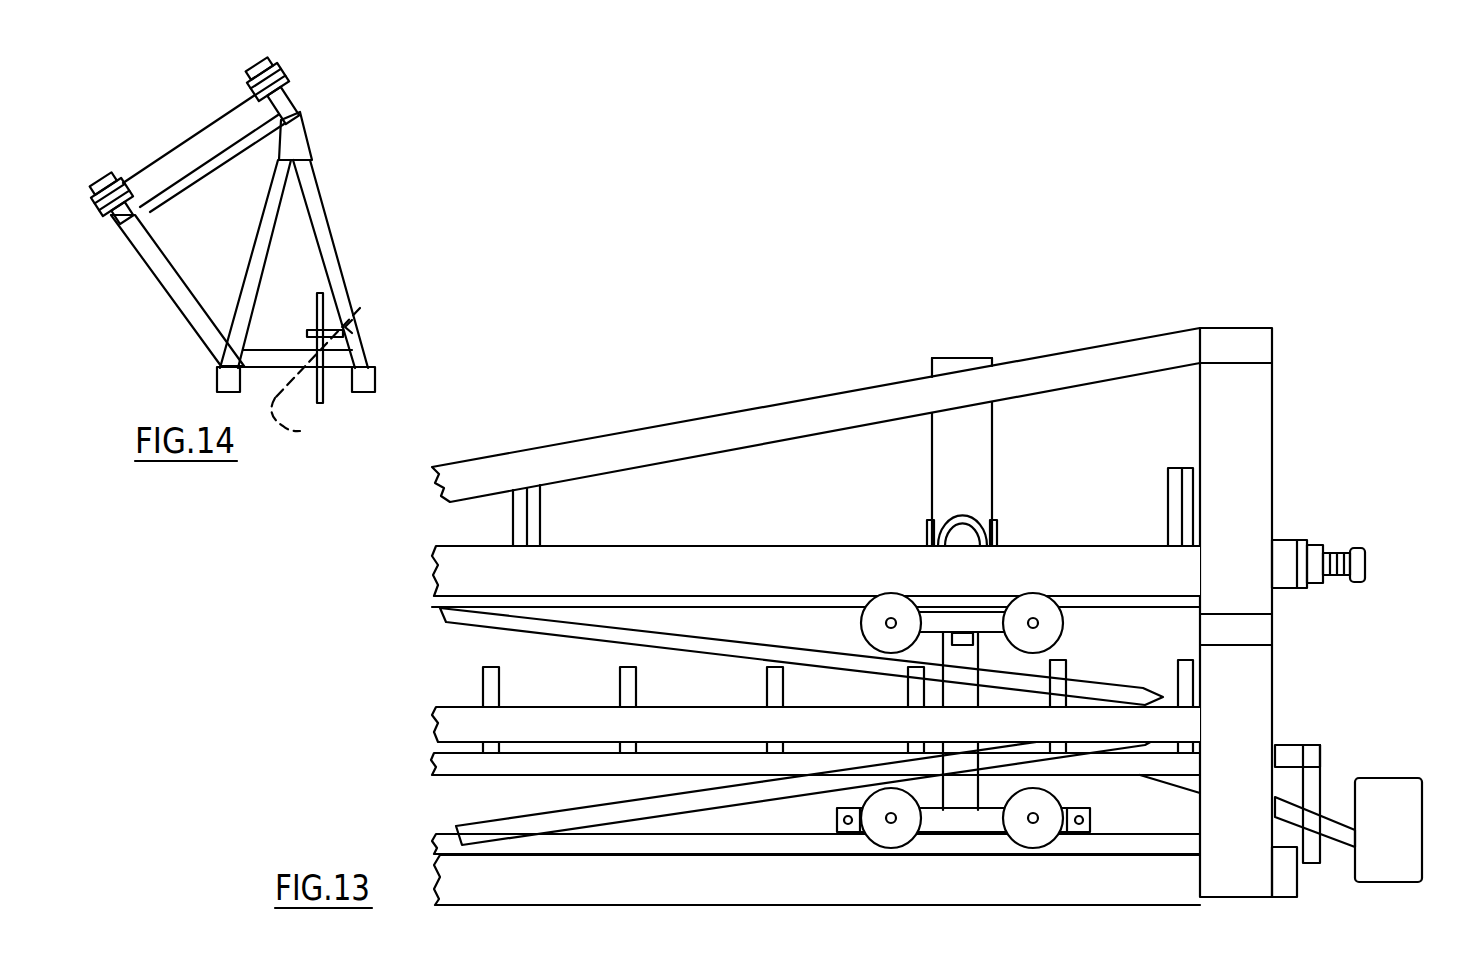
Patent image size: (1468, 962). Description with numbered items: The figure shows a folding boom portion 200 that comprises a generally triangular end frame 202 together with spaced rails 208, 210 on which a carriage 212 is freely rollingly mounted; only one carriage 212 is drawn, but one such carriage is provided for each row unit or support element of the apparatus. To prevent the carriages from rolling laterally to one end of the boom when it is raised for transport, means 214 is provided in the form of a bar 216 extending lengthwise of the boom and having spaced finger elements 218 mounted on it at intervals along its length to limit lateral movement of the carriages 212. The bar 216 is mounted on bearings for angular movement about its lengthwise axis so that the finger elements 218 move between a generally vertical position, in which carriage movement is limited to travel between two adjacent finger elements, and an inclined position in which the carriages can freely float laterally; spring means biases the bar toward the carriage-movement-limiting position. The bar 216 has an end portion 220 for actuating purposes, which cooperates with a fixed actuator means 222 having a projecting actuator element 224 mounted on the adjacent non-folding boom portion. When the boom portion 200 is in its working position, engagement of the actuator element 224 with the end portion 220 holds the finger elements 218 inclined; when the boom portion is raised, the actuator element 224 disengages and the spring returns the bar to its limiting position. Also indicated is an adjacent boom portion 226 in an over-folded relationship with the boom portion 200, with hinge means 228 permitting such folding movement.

In FIG. 13, the folding boom portion 200 is at (1286, 458).
In FIG. 14, the folding boom portion 200 is at (337, 192).
In FIG. 13, the end frame 202 is at (1270, 633).
In FIG. 14, the end frame 202 is at (307, 150).
In FIG. 13, the rail 208 is at (480, 873).
In FIG. 14, the rail 208 is at (215, 378).
In FIG. 13, the rail 210 is at (762, 560).
In FIG. 14, the rail 210 is at (380, 367).
In FIG. 13, the carriage 212 is at (1073, 585).
In FIG. 13, the means to limit carriage movement 214 is at (1310, 730).
In FIG. 13, the bar 216 is at (452, 773).
In FIG. 13, the finger elements 218 is at (492, 686).
In FIG. 14, the finger elements 218 is at (317, 428).
In FIG. 13, the end portion 220 is at (1323, 843).
In FIG. 13, the actuator means 222 is at (1377, 797).
In FIG. 13, the actuator element 224 is at (1287, 805).
In FIG. 14, the actuator element 224 is at (313, 330).
In FIG. 14, the adjacent boom portion 226 is at (165, 323).
In FIG. 14, the hinge means 228 is at (238, 93).